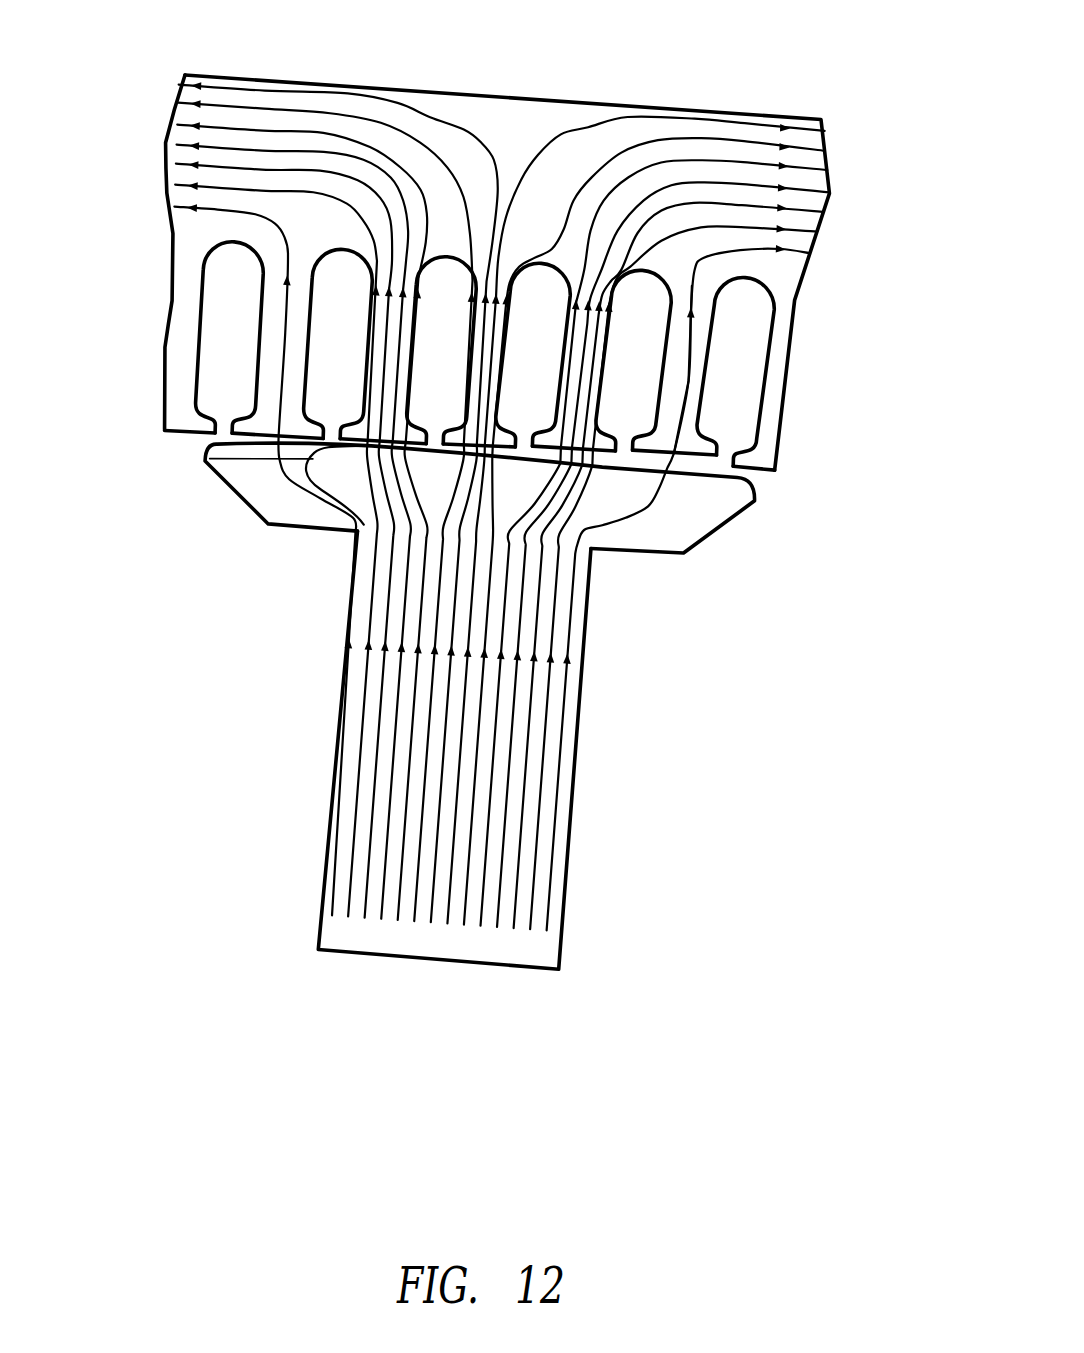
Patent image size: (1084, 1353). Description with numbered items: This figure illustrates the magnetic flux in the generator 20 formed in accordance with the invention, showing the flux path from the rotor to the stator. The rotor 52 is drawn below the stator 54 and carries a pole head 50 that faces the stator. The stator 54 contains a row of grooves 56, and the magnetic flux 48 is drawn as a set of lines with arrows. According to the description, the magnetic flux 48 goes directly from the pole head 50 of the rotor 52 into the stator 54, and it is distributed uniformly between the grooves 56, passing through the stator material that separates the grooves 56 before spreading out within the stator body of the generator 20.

The generator 20 is at (457, 530).
The magnetic flux 48 is at (494, 275).
The pole head 50 is at (479, 497).
The rotor 52 is at (454, 749).
The stator 54 is at (736, 372).
The grooves 56 is at (677, 369).